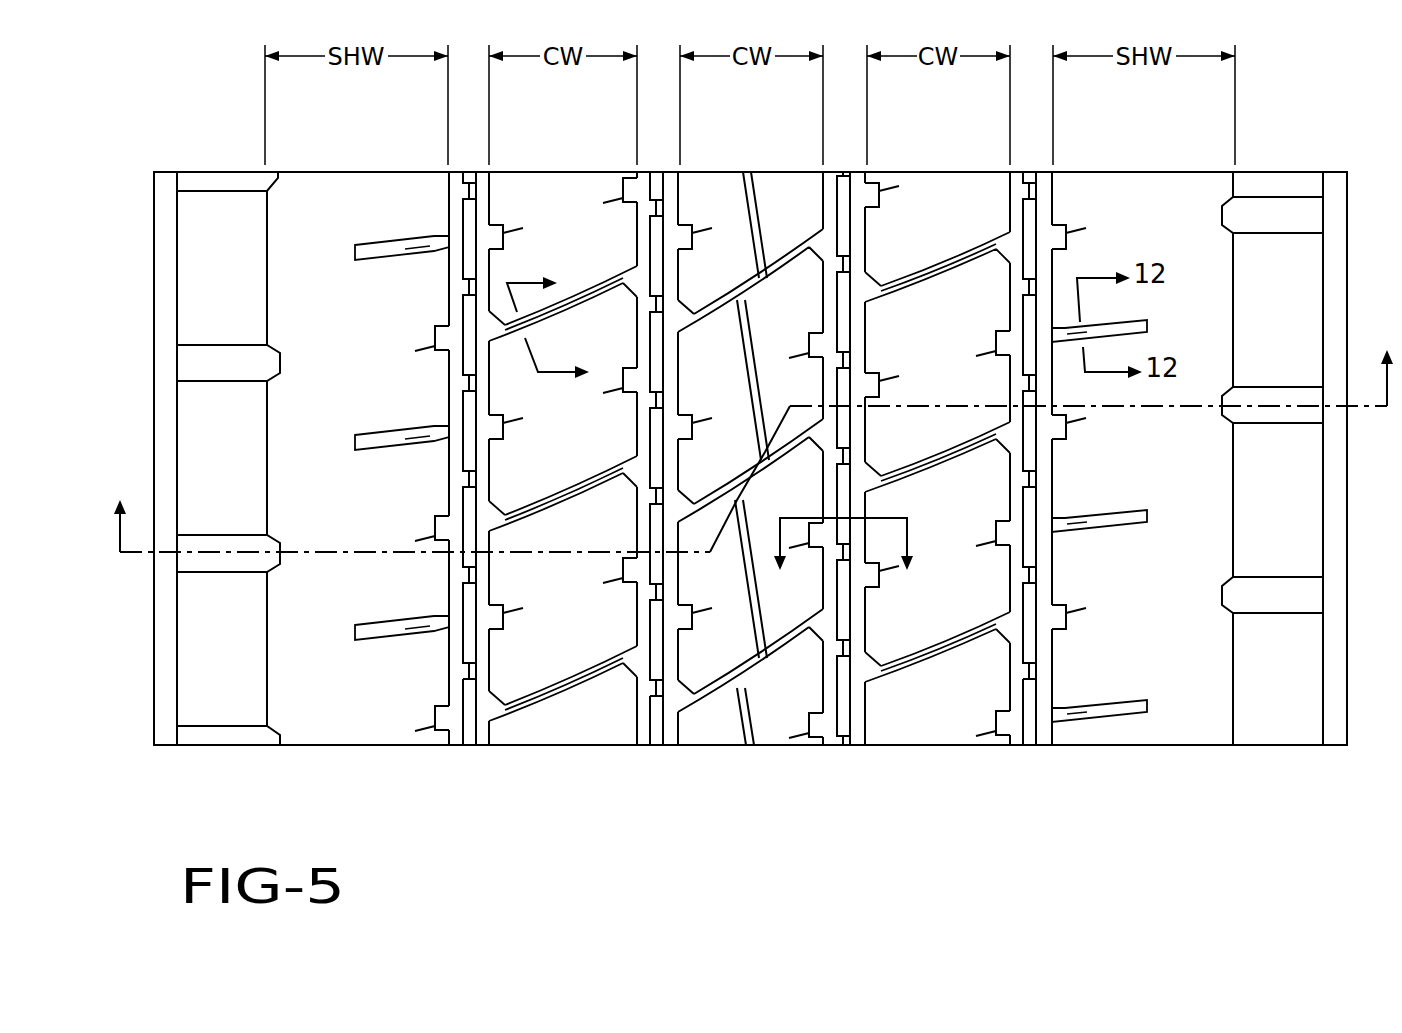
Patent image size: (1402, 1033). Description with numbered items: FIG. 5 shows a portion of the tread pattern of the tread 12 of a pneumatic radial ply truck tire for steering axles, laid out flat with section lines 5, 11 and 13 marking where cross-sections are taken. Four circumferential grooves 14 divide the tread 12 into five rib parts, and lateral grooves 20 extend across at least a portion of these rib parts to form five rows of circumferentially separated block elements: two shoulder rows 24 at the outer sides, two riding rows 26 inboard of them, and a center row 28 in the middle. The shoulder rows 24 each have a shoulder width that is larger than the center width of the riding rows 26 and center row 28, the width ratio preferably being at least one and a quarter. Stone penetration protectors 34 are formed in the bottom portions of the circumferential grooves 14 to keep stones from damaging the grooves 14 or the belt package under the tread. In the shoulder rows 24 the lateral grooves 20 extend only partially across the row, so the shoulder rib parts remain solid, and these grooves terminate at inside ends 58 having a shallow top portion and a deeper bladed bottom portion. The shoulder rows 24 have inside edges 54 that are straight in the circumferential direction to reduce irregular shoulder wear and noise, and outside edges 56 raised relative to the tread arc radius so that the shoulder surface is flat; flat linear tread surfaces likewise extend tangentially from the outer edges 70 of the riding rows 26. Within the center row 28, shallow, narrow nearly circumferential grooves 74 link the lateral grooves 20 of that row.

The tread 12 is at (130, 175).
The circumferential grooves 14 is at (470, 752).
The lateral grooves 20 is at (372, 630).
The shoulder rows 24 is at (318, 190).
The riding rows 26 is at (543, 190).
The center row 28 is at (726, 190).
The stone penetration protectors 34 is at (657, 662).
The inside edges 54 is at (447, 677).
The outside edges 56 is at (268, 687).
The inside ends 58 is at (417, 622).
The outer edges 70 is at (497, 733).
The nearly circumferential grooves 74 is at (738, 735).
The section line 5- 5 is at (754, 434).
The section line 11- 11 is at (565, 311).
The belt-package 13 is at (845, 562).